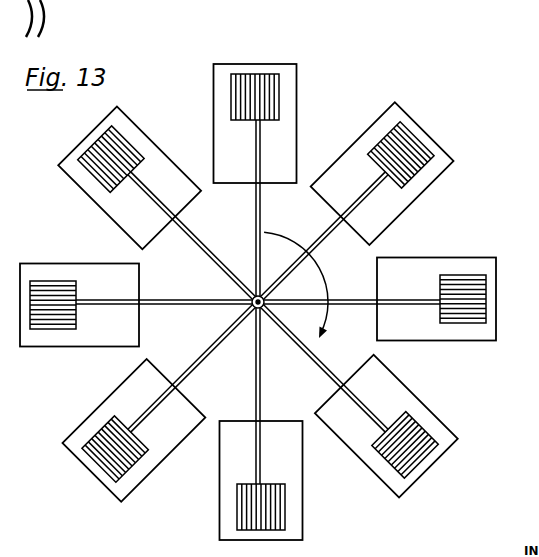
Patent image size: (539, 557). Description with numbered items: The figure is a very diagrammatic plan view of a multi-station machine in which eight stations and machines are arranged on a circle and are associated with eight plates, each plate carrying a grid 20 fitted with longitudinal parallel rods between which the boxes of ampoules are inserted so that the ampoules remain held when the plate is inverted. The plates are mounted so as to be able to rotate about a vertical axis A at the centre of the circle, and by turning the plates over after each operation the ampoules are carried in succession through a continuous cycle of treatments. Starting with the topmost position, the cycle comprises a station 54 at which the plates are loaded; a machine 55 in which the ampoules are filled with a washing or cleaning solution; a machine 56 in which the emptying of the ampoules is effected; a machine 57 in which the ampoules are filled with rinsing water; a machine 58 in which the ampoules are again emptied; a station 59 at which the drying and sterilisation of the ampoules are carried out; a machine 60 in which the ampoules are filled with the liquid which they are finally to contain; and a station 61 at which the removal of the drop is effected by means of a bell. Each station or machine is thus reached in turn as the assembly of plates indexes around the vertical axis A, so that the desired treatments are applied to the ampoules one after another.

The grid 20 is at (263, 104).
The station 54 is at (282, 153).
The machine 55 is at (421, 141).
The machine 56 is at (470, 269).
The machine 57 is at (392, 402).
The machine 58 is at (276, 460).
The station 59 is at (125, 403).
The machine 60 is at (75, 273).
The station 61 is at (162, 177).
The vertical axis A is at (255, 294).